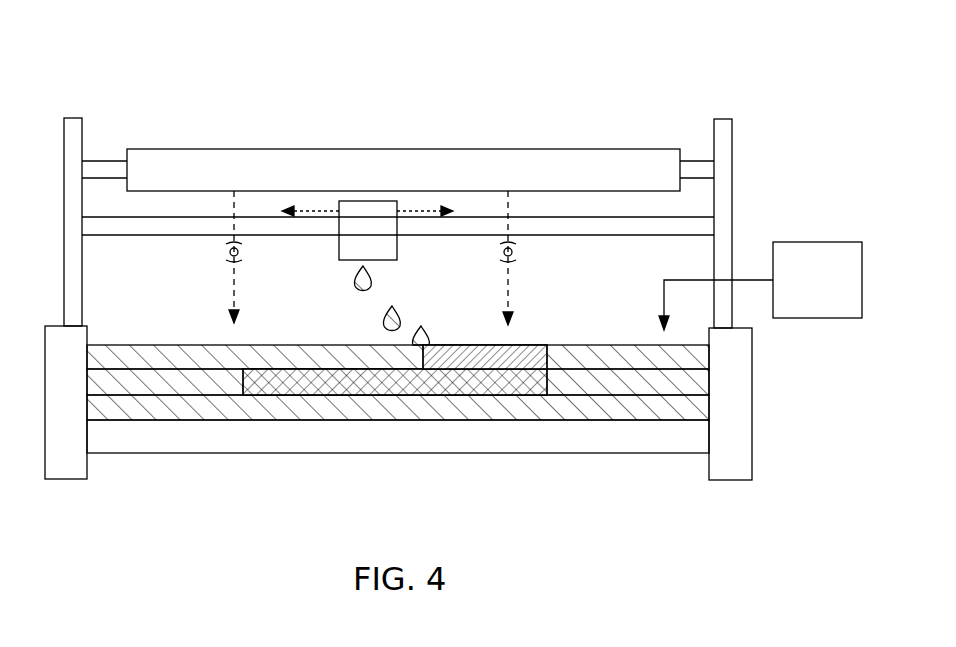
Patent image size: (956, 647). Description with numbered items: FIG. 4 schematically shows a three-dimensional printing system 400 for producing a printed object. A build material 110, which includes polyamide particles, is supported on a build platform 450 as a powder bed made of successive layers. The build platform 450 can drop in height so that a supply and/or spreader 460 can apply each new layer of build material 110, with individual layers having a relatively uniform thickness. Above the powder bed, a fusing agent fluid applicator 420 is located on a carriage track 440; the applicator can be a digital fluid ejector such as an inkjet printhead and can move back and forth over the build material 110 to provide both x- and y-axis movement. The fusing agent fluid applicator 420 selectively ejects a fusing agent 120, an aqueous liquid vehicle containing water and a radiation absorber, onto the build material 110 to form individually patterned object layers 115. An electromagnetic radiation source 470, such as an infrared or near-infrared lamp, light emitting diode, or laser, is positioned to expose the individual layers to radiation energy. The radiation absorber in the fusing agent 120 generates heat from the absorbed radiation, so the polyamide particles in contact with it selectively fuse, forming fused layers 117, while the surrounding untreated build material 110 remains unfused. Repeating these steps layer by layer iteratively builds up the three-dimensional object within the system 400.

The three-dimensional printing system 400 is at (163, 42).
The electromagnetic radiation source 470 is at (391, 180).
The carriage track 440 is at (552, 225).
The fusing agent fluid applicator 420 is at (351, 241).
The fusing agent 120 is at (352, 282).
The build material 110 is at (175, 380).
The fused layers 117 is at (307, 383).
The individually patterned object layers 115 is at (492, 355).
The build platform 450 is at (381, 447).
The supply and/or spreader 460 is at (799, 290).